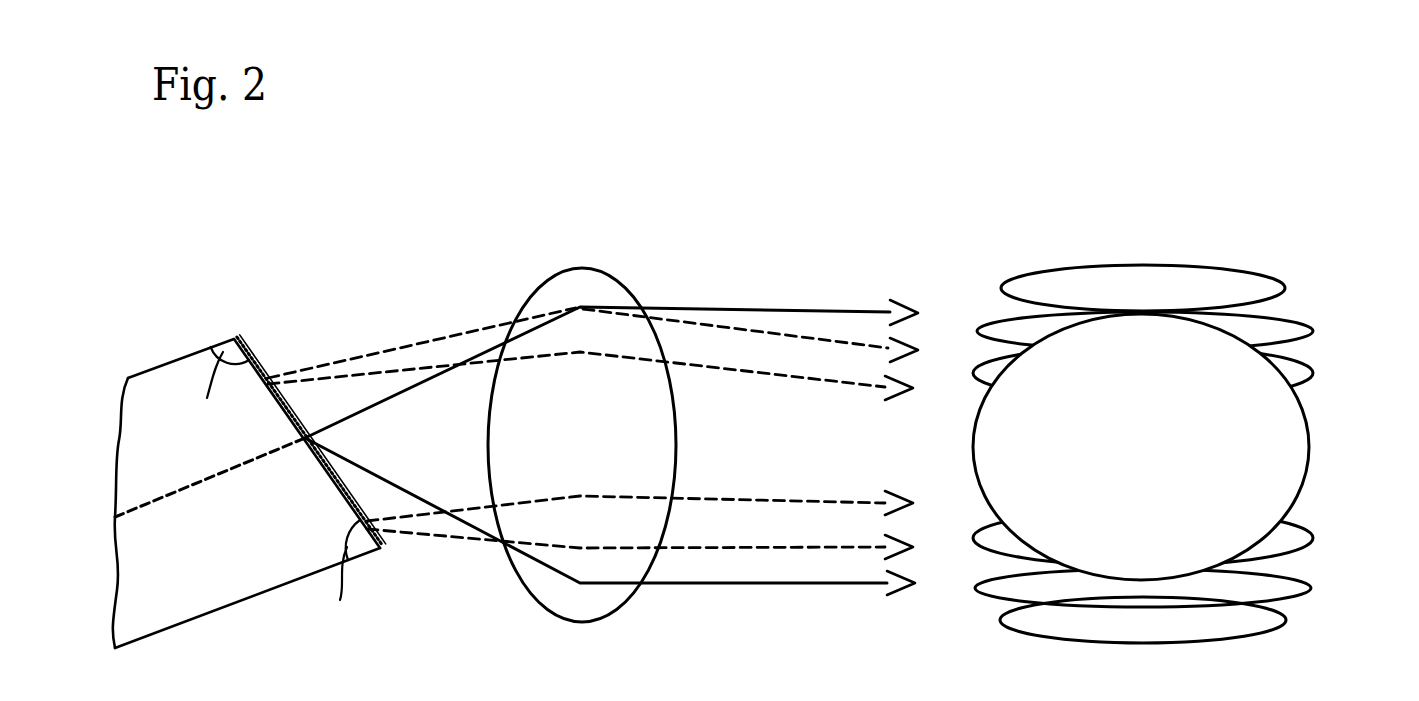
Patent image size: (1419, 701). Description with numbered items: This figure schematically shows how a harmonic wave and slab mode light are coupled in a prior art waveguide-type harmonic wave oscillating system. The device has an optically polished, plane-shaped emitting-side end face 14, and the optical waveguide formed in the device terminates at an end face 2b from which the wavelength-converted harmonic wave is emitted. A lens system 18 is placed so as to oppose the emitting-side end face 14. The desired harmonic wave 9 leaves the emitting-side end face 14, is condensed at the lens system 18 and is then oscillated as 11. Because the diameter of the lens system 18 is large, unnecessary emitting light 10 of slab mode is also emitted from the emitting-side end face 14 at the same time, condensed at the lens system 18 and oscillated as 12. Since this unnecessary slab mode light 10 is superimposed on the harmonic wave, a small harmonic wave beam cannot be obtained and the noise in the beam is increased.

The emitting-side end face 14 is at (268, 362).
The end face of the optical waveguide 2b is at (307, 433).
The lens system 18 is at (597, 282).
The desired harmonic wave 9 is at (833, 308).
The unnecessary emitting light of slab mode 10 is at (793, 373).
The oscillated slab mode light 12 is at (1273, 290).
The oscillated harmonic wave 11 is at (1287, 447).